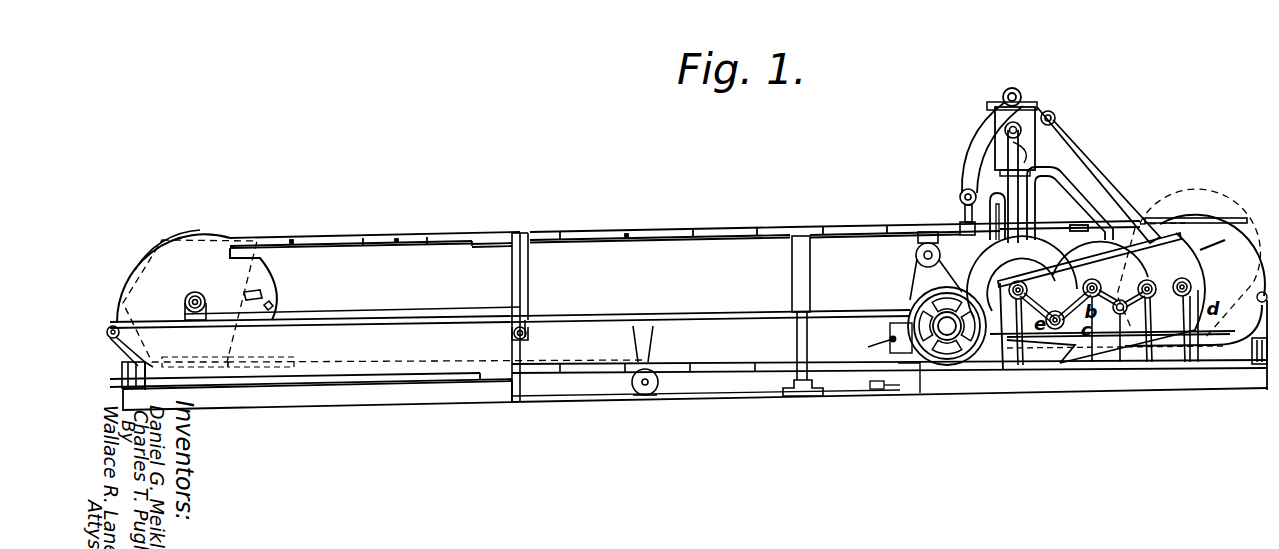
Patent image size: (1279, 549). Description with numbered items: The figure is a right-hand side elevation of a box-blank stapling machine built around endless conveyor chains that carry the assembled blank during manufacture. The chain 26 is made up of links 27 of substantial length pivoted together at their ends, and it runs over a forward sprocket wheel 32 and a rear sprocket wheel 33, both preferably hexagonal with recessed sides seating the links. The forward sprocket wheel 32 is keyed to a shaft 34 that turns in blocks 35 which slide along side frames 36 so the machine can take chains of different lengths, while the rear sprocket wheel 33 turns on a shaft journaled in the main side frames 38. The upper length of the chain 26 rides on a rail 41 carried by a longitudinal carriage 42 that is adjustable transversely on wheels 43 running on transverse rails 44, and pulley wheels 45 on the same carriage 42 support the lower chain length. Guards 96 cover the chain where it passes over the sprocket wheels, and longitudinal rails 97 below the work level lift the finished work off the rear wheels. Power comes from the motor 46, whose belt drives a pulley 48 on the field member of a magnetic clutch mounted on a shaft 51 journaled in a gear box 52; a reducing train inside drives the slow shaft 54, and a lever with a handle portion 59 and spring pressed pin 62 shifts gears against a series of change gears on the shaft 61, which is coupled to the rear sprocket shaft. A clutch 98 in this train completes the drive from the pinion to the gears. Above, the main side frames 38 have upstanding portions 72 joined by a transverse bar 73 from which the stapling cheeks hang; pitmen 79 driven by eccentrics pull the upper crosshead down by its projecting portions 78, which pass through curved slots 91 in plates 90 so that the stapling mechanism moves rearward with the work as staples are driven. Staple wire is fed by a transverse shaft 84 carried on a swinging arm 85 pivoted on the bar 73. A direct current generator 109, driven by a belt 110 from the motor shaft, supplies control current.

The conveyor chain 26 is at (568, 233).
The links 27 is at (340, 238).
The forward sprocket wheel 32 is at (173, 253).
The rear sprocket wheel 33 is at (1242, 257).
The shaft 34 is at (199, 296).
The blocks 35 is at (217, 303).
The side frames 36 is at (355, 337).
The main side frames 38 is at (1072, 170).
The rail 41 is at (700, 235).
The carriage 42 is at (99, 325).
The wheels 43 is at (150, 360).
The transverse rails 44 is at (163, 400).
The pulley wheels 45 is at (636, 386).
The motor 46 is at (910, 298).
The pulley 48 is at (1020, 248).
The shaft 51 is at (1018, 300).
The gear box 52 is at (1097, 330).
The shaft 54 is at (1146, 298).
The handle portion 59 is at (1200, 250).
The shaft 61 is at (1180, 296).
The spring pressed pin 62 is at (1223, 243).
The upstanding portions 72 is at (1040, 140).
The transverse bar 73 is at (1013, 94).
The projecting portions 78 is at (1040, 113).
The pitmen 79 is at (1019, 187).
The transverse shaft 84 is at (961, 193).
The swinging arm 85 is at (985, 128).
The plates 90 is at (996, 158).
The slots 91 is at (1003, 138).
The guards 96 is at (163, 232).
The longitudinal rails 97 is at (1232, 218).
The clutch 98 is at (1056, 306).
The direct current generator 109 is at (922, 228).
The belt 110 is at (922, 282).